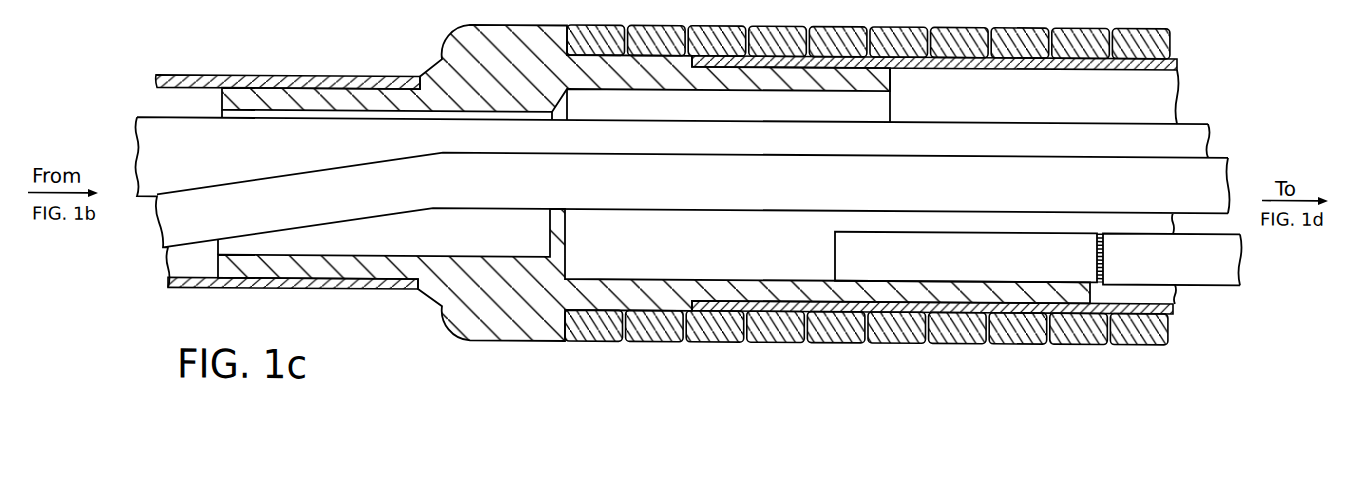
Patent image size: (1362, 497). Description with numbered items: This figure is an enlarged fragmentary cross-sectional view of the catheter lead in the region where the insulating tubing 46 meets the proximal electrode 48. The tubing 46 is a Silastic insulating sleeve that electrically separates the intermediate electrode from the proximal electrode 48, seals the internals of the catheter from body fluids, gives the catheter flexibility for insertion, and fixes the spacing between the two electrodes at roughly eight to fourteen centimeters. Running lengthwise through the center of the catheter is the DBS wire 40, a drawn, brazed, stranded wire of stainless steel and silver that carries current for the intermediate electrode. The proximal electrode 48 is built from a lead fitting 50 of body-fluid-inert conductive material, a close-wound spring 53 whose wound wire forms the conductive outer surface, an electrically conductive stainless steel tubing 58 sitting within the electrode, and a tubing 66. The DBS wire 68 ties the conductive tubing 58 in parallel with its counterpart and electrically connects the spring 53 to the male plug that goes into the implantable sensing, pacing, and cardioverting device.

The DBS wire 40 is at (500, 209).
The tubing 46 is at (353, 289).
The proximal electrode 48 is at (722, 358).
The lead fitting 50 is at (438, 304).
The spring 53 is at (603, 341).
The electrically conductive tubing 58 is at (930, 266).
The tubing 66 is at (1042, 308).
The DBS wire 68 is at (1218, 271).